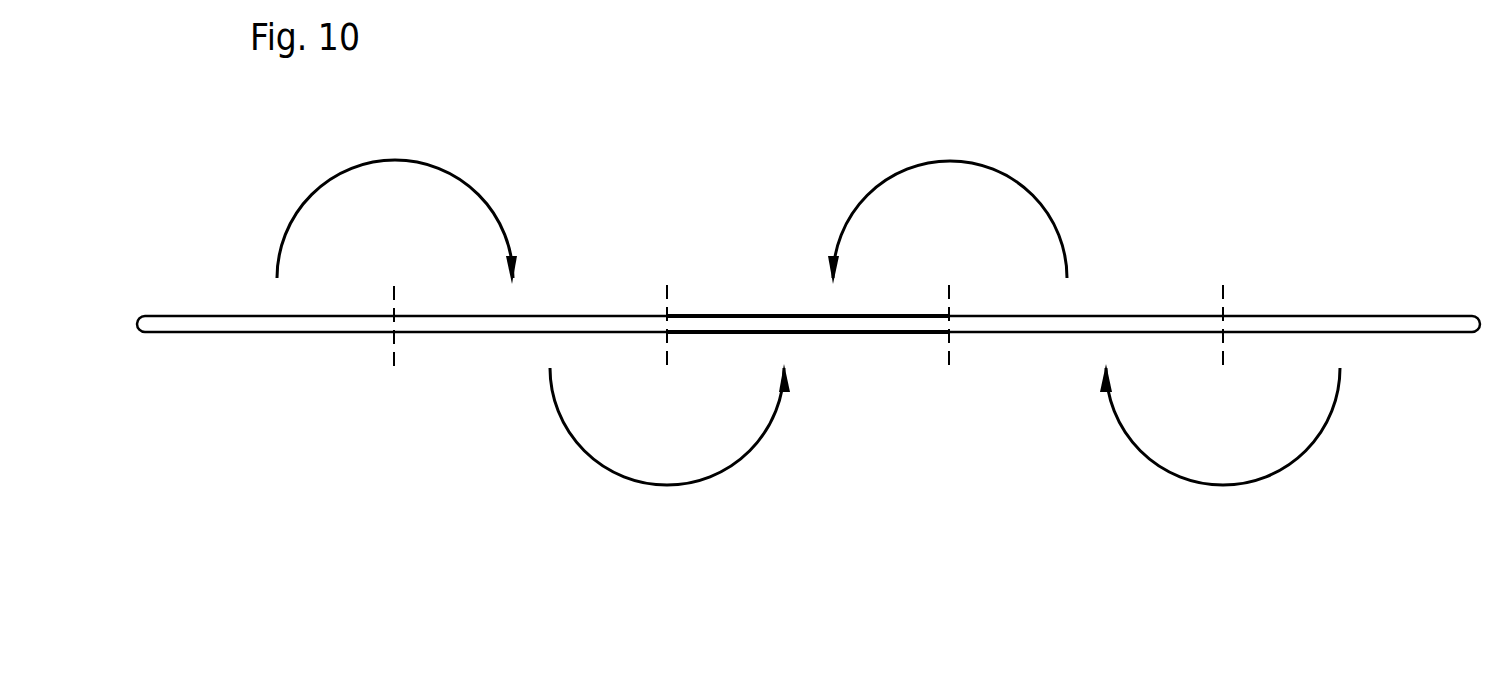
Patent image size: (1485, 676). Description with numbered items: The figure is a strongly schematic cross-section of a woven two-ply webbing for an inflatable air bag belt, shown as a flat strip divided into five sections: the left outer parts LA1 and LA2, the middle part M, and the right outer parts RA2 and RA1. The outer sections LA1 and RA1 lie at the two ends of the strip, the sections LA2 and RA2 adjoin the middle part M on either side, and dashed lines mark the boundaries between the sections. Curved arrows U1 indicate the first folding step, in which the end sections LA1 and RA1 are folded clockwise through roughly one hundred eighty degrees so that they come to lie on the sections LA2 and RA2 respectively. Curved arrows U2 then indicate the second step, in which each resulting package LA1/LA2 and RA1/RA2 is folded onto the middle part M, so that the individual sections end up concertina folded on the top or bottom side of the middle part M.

The arrow indicating first folding step U1 is at (340, 174).
The arrow indicating second folding step U2 is at (1010, 178).
The middle part M is at (748, 298).
The left outer part LA1 is at (250, 332).
The left outer part LA2 is at (478, 332).
The right outer part RA1 is at (1360, 318).
The right outer part RA2 is at (1080, 318).